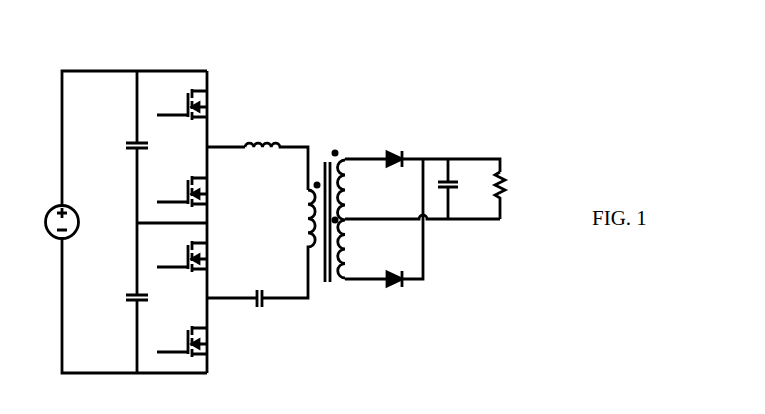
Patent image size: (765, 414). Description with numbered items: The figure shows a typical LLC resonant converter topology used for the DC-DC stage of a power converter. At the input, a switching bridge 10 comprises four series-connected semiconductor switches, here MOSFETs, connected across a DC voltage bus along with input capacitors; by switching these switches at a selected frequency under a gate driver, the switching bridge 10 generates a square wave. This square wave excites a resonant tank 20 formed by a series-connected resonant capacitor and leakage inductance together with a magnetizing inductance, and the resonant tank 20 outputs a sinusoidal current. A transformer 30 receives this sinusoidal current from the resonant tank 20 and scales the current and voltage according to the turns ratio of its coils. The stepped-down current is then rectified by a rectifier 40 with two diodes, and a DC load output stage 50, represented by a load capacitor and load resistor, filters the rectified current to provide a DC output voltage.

The switching bridge 10 is at (163, 45).
The resonant tank 20 is at (277, 97).
The transformer 30 is at (328, 128).
The rectifier 40 is at (415, 137).
The DC load output stage 50 is at (485, 147).